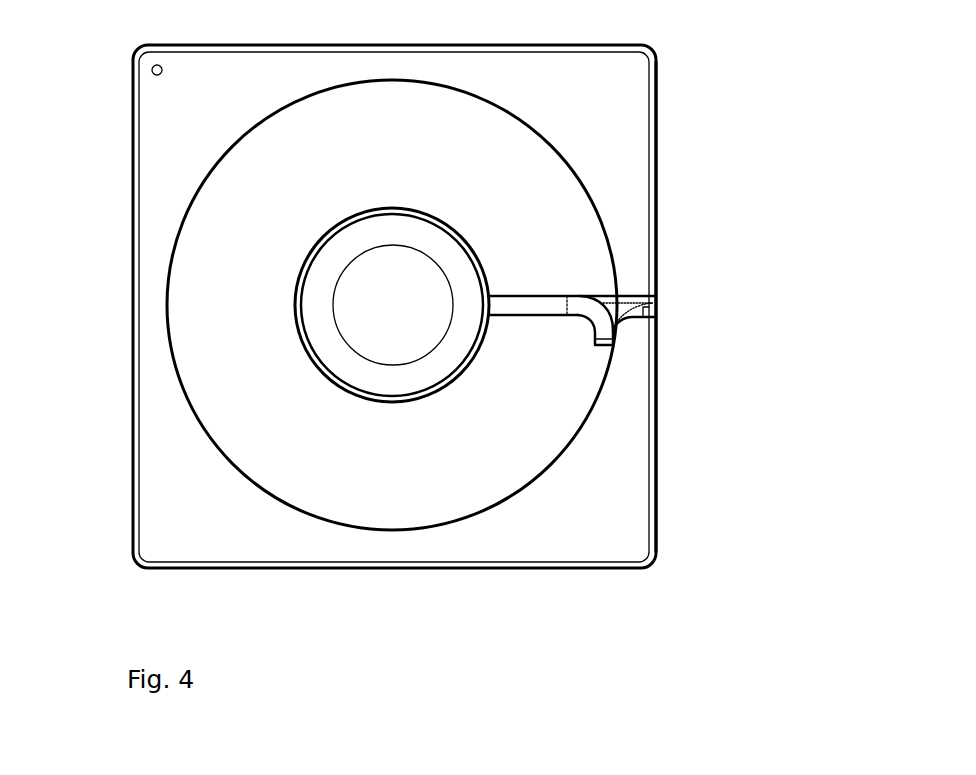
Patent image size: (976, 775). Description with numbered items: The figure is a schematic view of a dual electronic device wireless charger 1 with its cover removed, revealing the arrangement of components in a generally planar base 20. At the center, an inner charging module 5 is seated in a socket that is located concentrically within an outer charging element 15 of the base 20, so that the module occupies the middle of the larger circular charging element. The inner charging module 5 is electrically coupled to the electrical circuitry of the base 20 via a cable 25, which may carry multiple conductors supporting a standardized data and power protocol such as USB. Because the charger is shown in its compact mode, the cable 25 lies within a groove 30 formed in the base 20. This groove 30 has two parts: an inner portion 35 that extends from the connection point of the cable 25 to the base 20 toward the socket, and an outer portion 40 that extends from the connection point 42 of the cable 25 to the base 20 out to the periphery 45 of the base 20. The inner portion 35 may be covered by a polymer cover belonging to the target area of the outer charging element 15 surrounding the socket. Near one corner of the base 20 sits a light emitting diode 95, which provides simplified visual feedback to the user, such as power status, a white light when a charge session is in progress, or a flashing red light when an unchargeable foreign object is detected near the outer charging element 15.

The dual electronic device wireless charger 1 is at (425, 337).
The inner charging module 5 is at (392, 307).
The outer charging element 15 is at (263, 407).
The base 20 is at (597, 514).
The cable 25 is at (650, 195).
The inner portion of the groove 35 is at (520, 308).
The groove 30 is at (710, 284).
The outer portion of the groove 40 is at (640, 305).
The connection point 42 is at (597, 345).
The periphery of the base 45 is at (657, 207).
The light emitting diode (LED) 95 is at (152, 70).